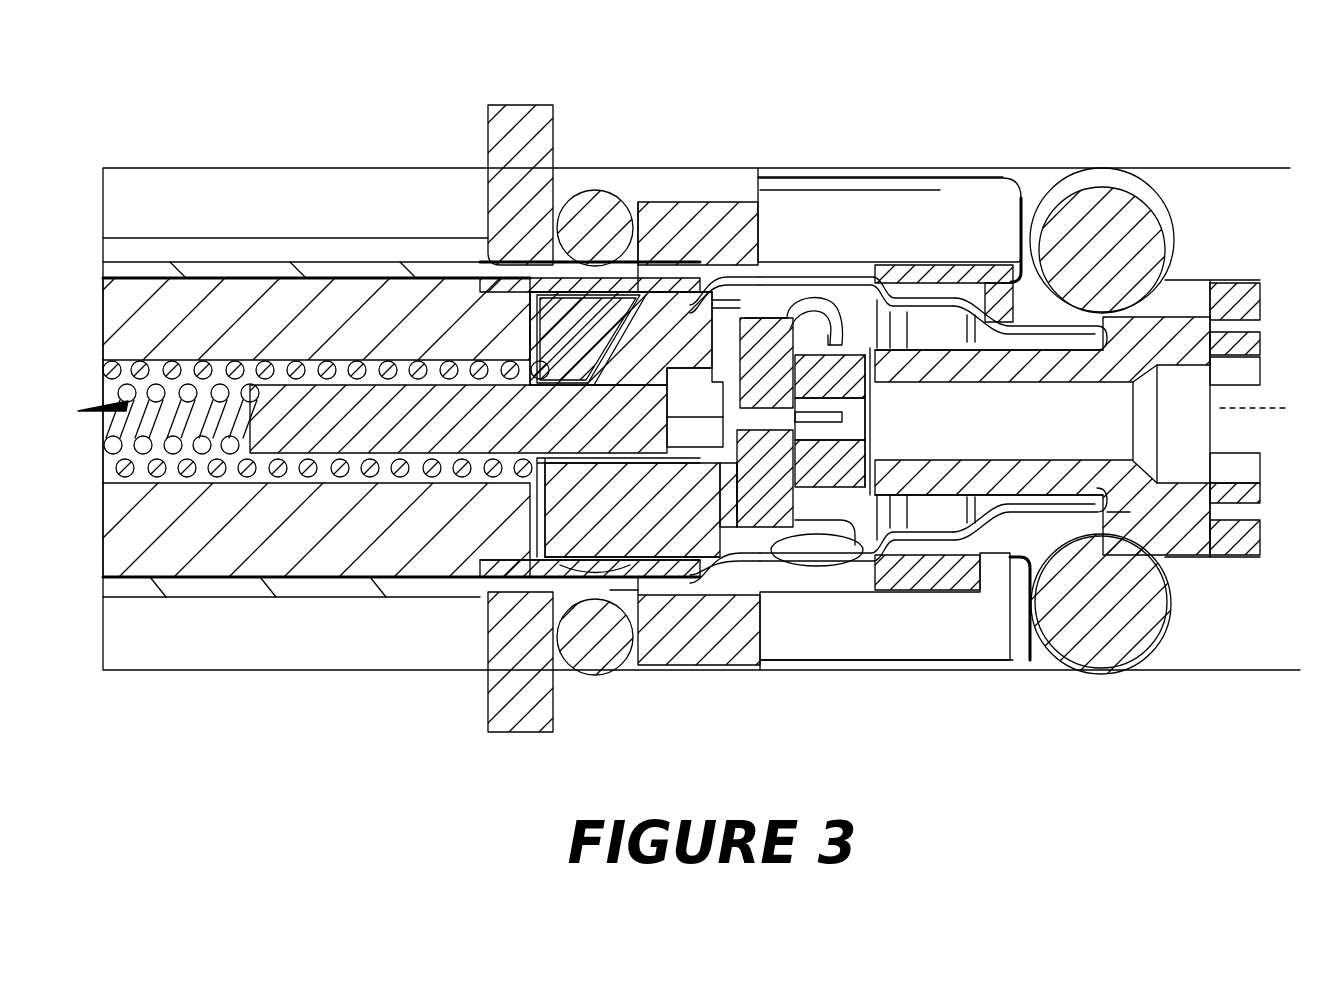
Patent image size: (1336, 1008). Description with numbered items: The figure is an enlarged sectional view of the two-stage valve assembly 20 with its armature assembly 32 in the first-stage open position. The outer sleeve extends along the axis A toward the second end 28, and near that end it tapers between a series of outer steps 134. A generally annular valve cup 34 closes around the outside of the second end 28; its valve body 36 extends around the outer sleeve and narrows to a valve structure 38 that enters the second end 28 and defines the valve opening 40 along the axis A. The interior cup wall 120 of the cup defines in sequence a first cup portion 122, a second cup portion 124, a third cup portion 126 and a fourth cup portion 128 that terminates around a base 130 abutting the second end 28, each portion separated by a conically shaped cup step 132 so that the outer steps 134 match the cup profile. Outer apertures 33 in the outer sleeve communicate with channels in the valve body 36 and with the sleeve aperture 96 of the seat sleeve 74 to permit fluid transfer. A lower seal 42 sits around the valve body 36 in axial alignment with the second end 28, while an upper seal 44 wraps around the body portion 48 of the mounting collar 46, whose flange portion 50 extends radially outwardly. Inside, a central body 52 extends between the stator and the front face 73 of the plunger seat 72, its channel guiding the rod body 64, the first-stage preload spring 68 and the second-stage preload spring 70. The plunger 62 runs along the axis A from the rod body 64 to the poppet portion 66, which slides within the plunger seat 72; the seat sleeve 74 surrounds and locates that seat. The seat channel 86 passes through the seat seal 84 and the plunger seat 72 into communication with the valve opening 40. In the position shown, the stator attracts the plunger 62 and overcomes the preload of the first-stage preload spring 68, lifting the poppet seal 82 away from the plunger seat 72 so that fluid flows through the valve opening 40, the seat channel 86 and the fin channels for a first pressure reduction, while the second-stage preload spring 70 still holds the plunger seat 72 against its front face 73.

The valve assembly 20 is at (1258, 153).
The second end 28 is at (1160, 328).
The armature assembly 32 is at (287, 313).
The outer apertures 33 is at (820, 552).
The valve cup 34 is at (985, 170).
The valve body 36 is at (808, 210).
The valve structure 38 is at (1087, 530).
The valve opening 40 is at (1052, 470).
The lower seal 42 is at (1093, 228).
The upper seal 44 is at (583, 225).
The mounting collar 46 is at (522, 170).
The body portion 48 is at (600, 605).
The flange portion 50 is at (513, 655).
The central body 52 is at (190, 300).
The plunger 62 is at (524, 384).
The rod body 64 is at (332, 440).
The poppet portion 66 is at (657, 310).
The first-stage preload spring 68 is at (122, 385).
The second-stage preload spring 70 is at (130, 478).
The plunger seat 72 is at (792, 327).
The front face 73 is at (540, 505).
The seat sleeve 74 is at (690, 560).
The poppet seal 82 is at (690, 372).
The seat seal 84 is at (840, 470).
The seat channel 86 is at (878, 407).
The sleeve aperture 96 is at (592, 565).
The interior cup wall 120 is at (930, 320).
The first cup portion 122 is at (718, 275).
The second cup portion 124 is at (840, 270).
The third cup portion 126 is at (918, 306).
The fourth cup portion 128 is at (1048, 330).
The base 130 is at (1110, 522).
The cup step 132 is at (1036, 445).
The outer steps 134 is at (735, 575).
The axis A is at (1268, 407).